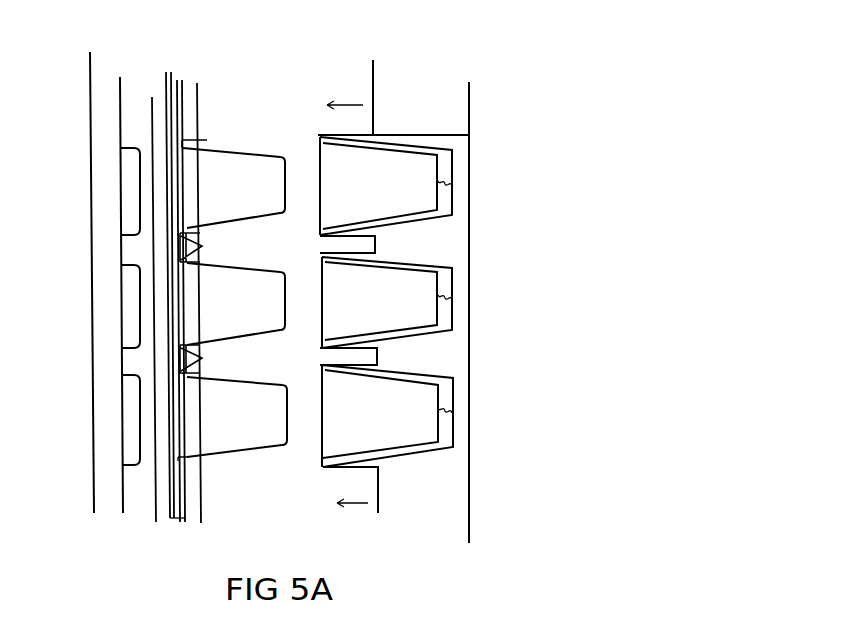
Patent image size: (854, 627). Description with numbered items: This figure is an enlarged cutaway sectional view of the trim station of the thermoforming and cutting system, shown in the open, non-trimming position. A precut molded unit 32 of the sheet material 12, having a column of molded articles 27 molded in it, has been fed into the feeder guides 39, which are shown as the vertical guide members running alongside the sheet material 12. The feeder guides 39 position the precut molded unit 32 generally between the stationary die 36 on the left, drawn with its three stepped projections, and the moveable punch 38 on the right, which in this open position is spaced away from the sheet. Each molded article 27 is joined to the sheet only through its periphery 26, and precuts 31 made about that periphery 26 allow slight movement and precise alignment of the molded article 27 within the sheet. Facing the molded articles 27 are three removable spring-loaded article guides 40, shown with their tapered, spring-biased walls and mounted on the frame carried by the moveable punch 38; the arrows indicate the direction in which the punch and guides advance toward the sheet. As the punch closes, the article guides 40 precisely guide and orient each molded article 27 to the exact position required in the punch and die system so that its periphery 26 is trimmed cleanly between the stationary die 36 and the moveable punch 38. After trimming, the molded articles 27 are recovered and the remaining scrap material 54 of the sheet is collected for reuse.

The sheet material 12 is at (173, 73).
The periphery 26 is at (186, 457).
The molded article 27 is at (250, 201).
The precut 31 is at (184, 140).
The precut molded unit 32 is at (238, 135).
The stationary die 36 is at (127, 180).
The moveable punch 38 is at (463, 491).
The feeder guide 39 is at (153, 100).
The spring-loaded article guide 40 is at (384, 199).
The scrap material 54 is at (180, 512).